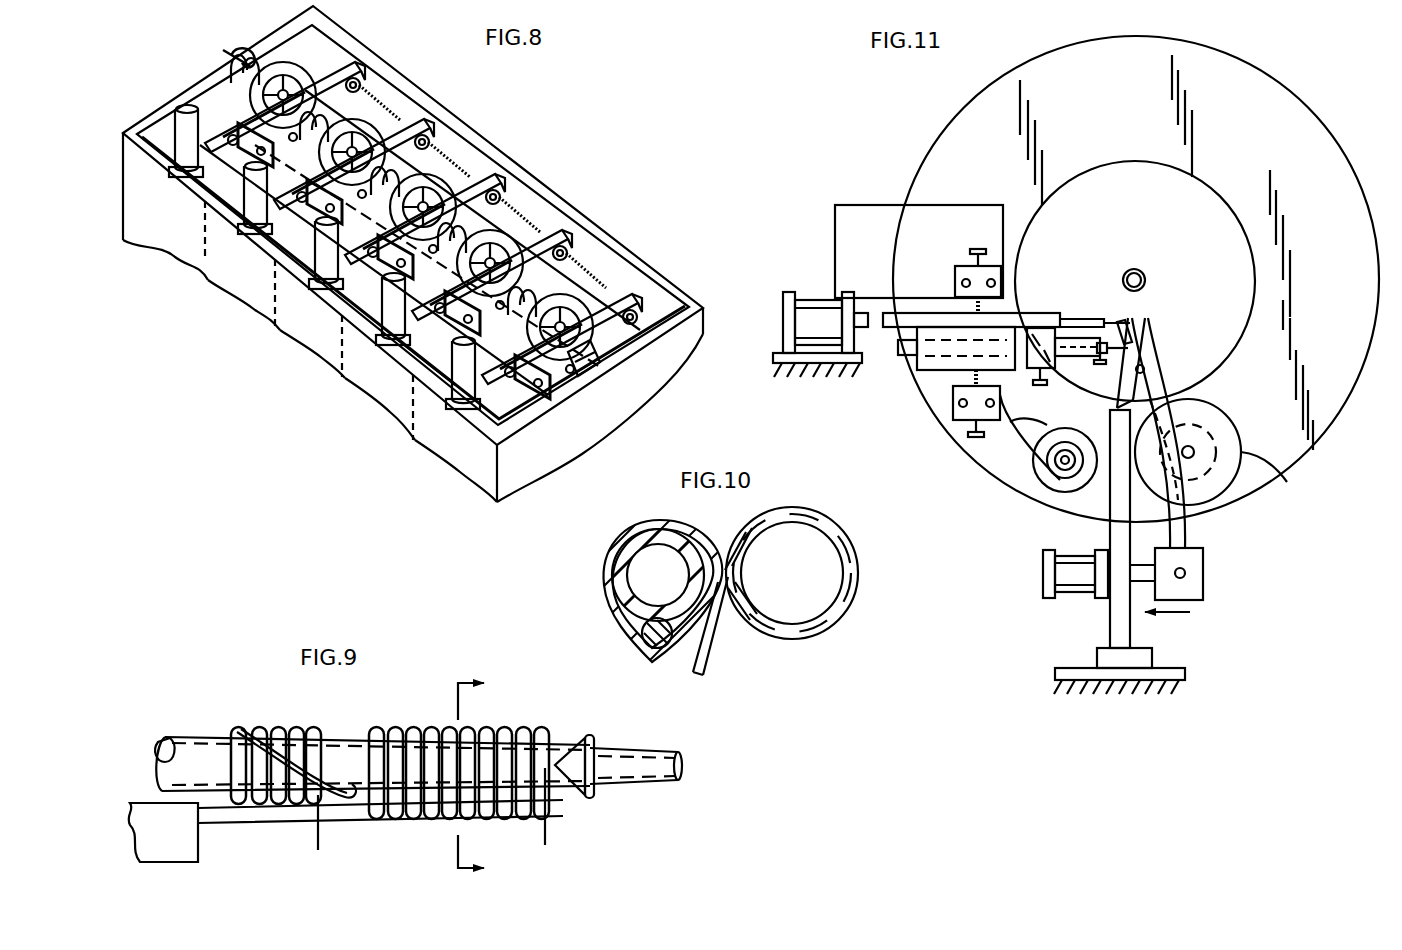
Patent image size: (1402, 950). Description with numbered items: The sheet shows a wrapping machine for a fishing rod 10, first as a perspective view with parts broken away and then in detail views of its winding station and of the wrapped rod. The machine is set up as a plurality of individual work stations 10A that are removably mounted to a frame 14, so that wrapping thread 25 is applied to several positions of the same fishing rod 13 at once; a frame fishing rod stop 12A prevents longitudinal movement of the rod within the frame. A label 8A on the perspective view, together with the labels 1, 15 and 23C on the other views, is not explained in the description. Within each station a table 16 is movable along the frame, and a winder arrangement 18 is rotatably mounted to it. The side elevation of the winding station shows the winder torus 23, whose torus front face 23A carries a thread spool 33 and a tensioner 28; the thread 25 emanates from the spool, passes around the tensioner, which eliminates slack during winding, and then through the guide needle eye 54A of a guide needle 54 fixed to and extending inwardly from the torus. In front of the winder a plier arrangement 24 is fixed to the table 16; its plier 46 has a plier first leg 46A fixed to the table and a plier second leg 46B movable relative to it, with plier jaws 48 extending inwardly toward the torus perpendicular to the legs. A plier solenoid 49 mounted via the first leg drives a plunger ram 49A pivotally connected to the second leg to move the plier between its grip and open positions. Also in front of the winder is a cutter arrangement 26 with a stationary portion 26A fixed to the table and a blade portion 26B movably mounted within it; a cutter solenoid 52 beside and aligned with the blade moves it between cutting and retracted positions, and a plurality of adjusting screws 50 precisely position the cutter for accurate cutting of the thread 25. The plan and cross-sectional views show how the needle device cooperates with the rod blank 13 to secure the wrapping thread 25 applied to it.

In FIG. 9, the rod 1 is at (328, 832).
In FIG. 8, the side wall 8A is at (420, 373).
In FIG. 8, the wrapping machine for a fishing rod 10 is at (340, 55).
In FIG. 9, the wrapping machine for a fishing rod 10 is at (489, 777).
In FIG. 8, the work stations 10A is at (175, 222).
In FIG. 8, the frame fishing rod stop 12A is at (590, 370).
In FIG. 8, the fishing rod 13 is at (223, 50).
In FIG. 11, the fishing rod 13 is at (1145, 277).
In FIG. 10, the fishing rod 13 is at (622, 588).
In FIG. 9, the fishing rod 13 is at (650, 782).
In FIG. 8, the frame 14 is at (537, 470).
In FIG. 10, the ring 15 is at (855, 588).
In FIG. 9, the ring 15 is at (592, 798).
In FIG. 11, the table 16 is at (778, 353).
In FIG. 11, the winder arrangement 18 is at (960, 153).
In FIG. 11, the torus 23 is at (1027, 70).
In FIG. 11, the torus front face 23A is at (1262, 98).
In FIG. 11, the housing 23C is at (850, 205).
In FIG. 11, the plier arrangement 24 is at (1218, 545).
In FIG. 11, the wrapping thread 25 is at (1040, 421).
In FIG. 10, the wrapping thread 25 is at (640, 532).
In FIG. 9, the wrapping thread 25 is at (405, 728).
In FIG. 11, the cutter arrangement 26 is at (902, 375).
In FIG. 11, the stationary portion 26A is at (925, 370).
In FIG. 11, the blade portion 26B is at (1080, 313).
In FIG. 11, the tensioner 28 is at (1035, 472).
In FIG. 11, the thread spool 33 is at (1286, 474).
In FIG. 11, the plier 46 is at (1190, 515).
In FIG. 11, the plier first leg 46A is at (1195, 400).
In FIG. 11, the plier second leg 46B is at (1185, 500).
In FIG. 11, the plier jaws 48 is at (1150, 329).
In FIG. 11, the plier solenoid 49 is at (1072, 578).
In FIG. 11, the plunger ram 49A is at (1203, 588).
In FIG. 11, the adjusting screws 50 is at (977, 260).
In FIG. 11, the cutter solenoid 52 is at (818, 300).
In FIG. 11, the guide needle 54 is at (1121, 328).
In FIG. 11, the guide needle eye 54A is at (1146, 370).